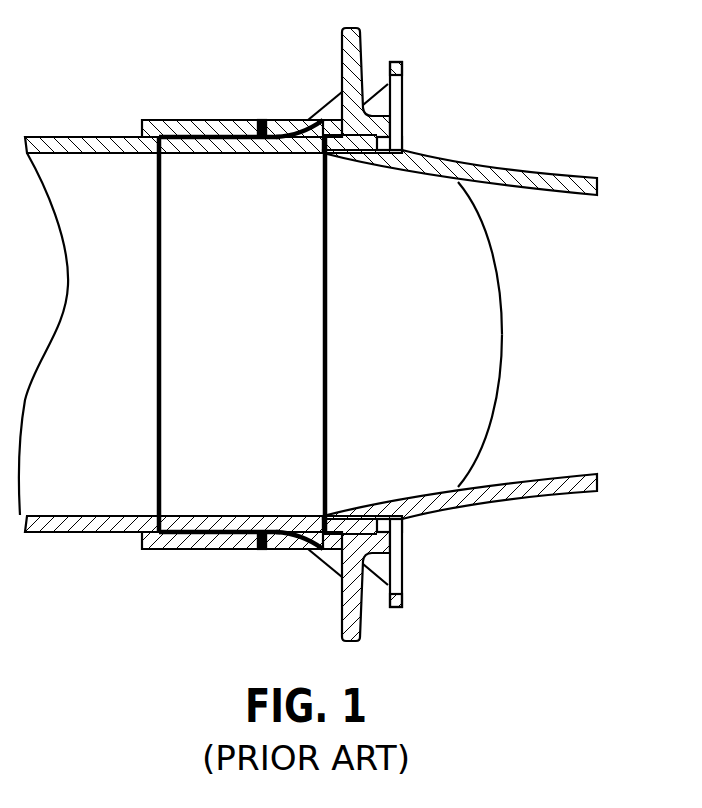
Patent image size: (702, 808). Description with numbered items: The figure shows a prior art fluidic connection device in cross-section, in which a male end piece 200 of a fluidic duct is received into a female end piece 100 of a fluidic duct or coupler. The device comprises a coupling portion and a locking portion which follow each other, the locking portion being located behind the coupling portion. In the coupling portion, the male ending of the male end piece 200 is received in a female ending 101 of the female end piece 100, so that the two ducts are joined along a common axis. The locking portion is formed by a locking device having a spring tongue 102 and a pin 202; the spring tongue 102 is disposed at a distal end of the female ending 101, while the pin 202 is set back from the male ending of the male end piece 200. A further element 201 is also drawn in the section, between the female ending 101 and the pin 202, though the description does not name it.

The female end piece 100 is at (77, 137).
The female ending 101 is at (183, 127).
The spring tongue 102 is at (402, 108).
The male end piece 200 is at (545, 187).
The second pipe flange 201 is at (248, 130).
The pin 202 is at (308, 130).